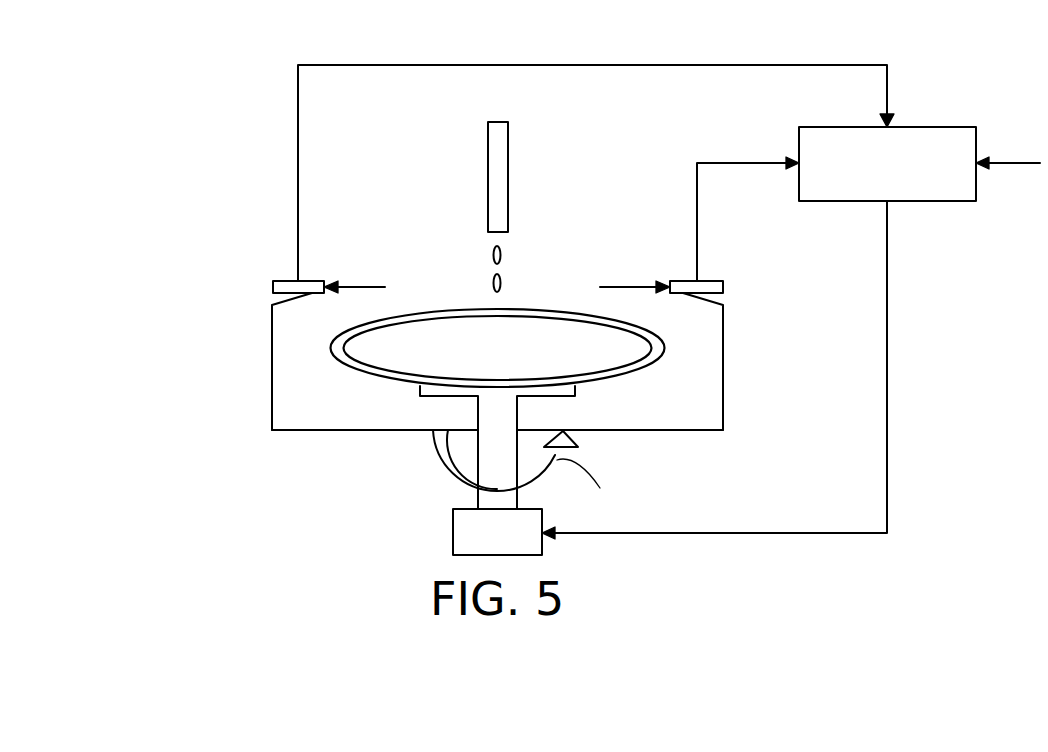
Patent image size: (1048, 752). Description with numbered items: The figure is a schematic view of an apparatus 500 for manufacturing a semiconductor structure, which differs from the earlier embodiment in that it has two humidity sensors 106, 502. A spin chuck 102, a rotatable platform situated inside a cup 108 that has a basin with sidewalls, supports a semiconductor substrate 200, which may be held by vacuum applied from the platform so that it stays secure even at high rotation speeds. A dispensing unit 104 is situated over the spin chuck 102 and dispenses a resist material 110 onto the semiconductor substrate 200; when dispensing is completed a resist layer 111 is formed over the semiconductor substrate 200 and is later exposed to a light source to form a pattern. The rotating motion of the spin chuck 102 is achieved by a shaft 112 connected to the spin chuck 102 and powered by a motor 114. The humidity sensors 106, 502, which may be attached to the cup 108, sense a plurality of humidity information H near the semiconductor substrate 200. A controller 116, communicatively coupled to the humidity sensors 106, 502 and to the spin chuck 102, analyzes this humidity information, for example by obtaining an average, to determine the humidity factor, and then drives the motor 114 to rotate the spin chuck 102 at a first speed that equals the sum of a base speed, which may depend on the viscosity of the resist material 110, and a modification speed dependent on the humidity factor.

The apparatus 500 is at (210, 52).
The spin chuck 102 is at (425, 390).
The dispensing unit 104 is at (497, 177).
The humidity sensor 106 is at (723, 286).
The cup 108 is at (272, 367).
The resist material 110 is at (499, 253).
The resist layer 111 is at (464, 330).
The shaft 112 is at (474, 448).
The motor 114 is at (453, 532).
The controller 116 is at (908, 180).
The semiconductor substrate 200 is at (408, 318).
The humidity sensor 502 is at (273, 286).